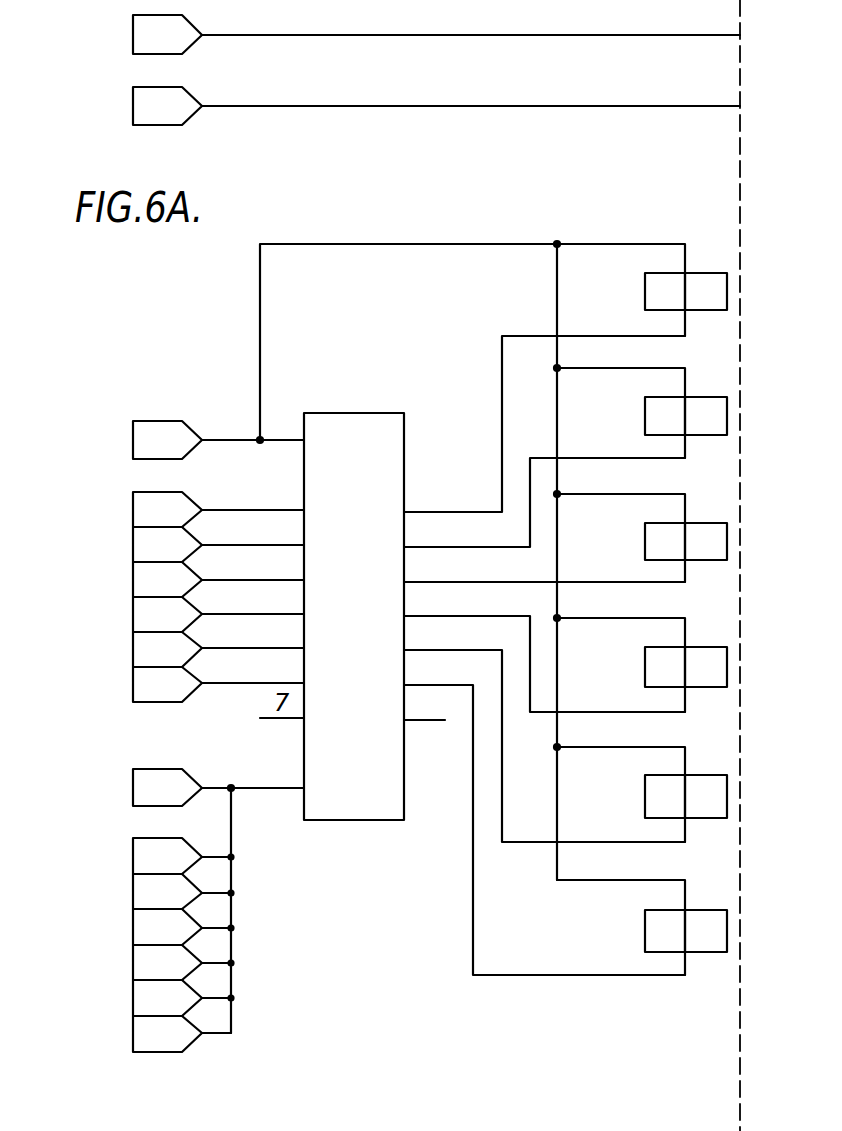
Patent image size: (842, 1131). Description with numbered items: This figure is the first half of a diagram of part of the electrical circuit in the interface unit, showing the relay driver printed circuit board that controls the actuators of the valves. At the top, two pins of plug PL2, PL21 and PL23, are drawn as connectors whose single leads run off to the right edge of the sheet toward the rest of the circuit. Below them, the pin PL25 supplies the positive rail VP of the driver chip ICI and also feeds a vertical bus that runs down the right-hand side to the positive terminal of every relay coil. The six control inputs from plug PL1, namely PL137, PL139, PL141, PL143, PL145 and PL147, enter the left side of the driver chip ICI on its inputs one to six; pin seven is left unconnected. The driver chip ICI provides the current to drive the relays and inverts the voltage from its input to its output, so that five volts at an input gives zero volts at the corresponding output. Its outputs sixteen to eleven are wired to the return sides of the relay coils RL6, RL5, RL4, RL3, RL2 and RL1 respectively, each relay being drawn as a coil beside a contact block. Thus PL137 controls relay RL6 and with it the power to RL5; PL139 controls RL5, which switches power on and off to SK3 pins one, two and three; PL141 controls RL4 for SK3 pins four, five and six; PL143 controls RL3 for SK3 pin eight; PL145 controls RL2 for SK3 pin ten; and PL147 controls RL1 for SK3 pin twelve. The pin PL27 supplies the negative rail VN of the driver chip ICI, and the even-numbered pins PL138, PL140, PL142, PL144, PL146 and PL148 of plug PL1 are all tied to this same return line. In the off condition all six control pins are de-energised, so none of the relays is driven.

The plug PL2 pin 1 PL21 is at (386, 29).
The plug PL2 pin 3 PL23 is at (386, 100).
The plug PL2 pin 5 PL25 is at (168, 434).
The plug PL2 pin 7 PL27 is at (168, 782).
The plug PL1 pin 37 PL137 is at (167, 504).
The plug PL1 pin 39 PL139 is at (167, 539).
The plug PL1 pin 41 PL141 is at (167, 574).
The plug PL1 pin 43 PL143 is at (167, 608).
The plug PL1 pin 45 PL145 is at (167, 643).
The plug PL1 pin 47 PL147 is at (167, 678).
The plug PL1 pin 38 PL138 is at (132, 856).
The plug PL1 pin 40 PL140 is at (132, 892).
The plug PL1 pin 42 PL142 is at (132, 927).
The plug PL1 pin 44 PL144 is at (132, 962).
The plug PL1 pin 46 PL146 is at (132, 998).
The plug PL1 pin 48 PL148 is at (130, 1033).
The driver chip ICI is at (352, 812).
The relay RL1 is at (642, 926).
The relay RL2 is at (640, 793).
The relay RL3 is at (640, 663).
The relay RL4 is at (640, 537).
The relay RL5 is at (640, 411).
The relay RL6 is at (640, 288).